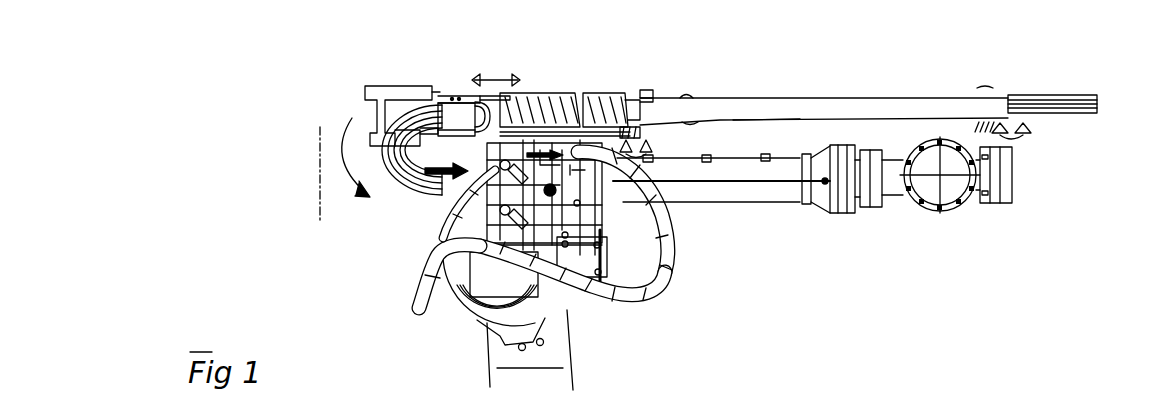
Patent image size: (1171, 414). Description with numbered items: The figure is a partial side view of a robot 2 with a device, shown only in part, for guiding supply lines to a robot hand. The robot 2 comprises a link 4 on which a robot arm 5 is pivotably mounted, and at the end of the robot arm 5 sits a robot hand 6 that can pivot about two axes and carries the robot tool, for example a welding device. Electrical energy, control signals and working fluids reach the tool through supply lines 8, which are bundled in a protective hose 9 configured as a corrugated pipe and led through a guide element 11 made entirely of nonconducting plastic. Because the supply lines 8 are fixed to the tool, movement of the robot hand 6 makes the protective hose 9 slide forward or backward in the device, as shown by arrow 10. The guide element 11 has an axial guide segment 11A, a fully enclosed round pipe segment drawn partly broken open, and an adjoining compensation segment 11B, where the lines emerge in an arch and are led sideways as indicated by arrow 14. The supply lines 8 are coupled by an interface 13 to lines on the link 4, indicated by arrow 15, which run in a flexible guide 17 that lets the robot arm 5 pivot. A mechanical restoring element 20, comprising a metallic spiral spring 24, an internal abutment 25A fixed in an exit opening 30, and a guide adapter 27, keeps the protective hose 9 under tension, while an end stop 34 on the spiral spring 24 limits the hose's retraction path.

The robot 2 is at (783, 313).
The link 4 is at (563, 373).
The robot arm 5 is at (800, 193).
The robot hand 6 is at (1003, 200).
The supply lines 8 is at (1052, 93).
The protective hose 9 is at (852, 107).
The arrow 10 is at (495, 78).
The guide element 11 is at (557, 92).
The axial guide segment 11A is at (612, 92).
The compensation segment 11B is at (433, 92).
The interface 13 is at (647, 273).
The arrow 14 is at (340, 153).
The arrow 15 is at (485, 198).
The guide 17 is at (650, 283).
The restoring element 20 is at (620, 157).
The spiral spring 24 is at (535, 110).
The internal abutment 25A is at (648, 92).
The guide adapter 27 is at (458, 97).
The exit opening 30 is at (733, 120).
The end stop 34 is at (684, 94).